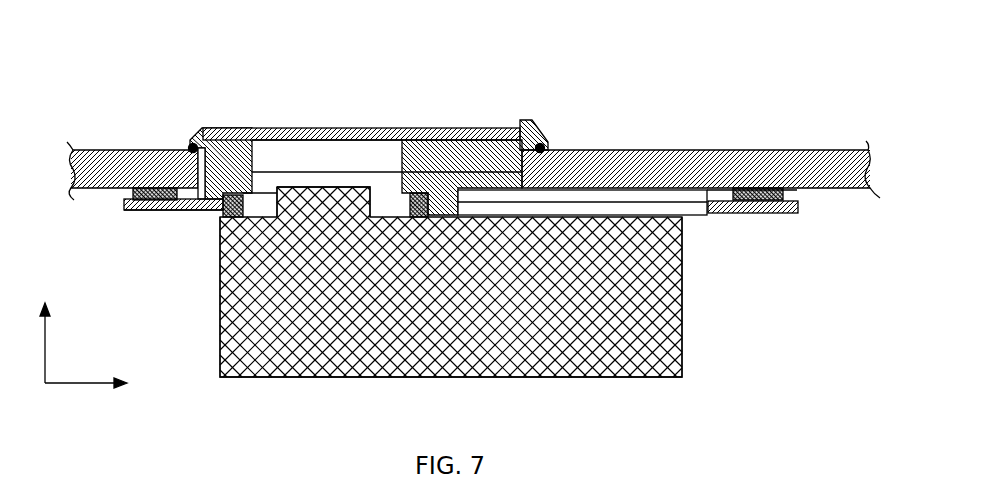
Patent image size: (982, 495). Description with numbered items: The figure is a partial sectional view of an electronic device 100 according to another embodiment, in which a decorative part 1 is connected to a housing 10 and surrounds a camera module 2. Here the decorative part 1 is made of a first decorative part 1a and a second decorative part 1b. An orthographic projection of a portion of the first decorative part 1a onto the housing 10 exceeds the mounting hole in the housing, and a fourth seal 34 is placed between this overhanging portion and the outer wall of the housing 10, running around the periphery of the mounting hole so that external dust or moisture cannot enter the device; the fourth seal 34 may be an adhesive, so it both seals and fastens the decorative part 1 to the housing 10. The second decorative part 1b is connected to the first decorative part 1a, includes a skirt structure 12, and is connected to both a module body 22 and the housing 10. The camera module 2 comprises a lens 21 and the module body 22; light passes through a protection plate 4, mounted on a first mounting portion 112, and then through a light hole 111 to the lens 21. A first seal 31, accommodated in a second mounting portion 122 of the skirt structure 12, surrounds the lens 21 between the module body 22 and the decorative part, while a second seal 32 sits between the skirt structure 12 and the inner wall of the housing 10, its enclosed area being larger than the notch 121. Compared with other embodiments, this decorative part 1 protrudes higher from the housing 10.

The electronic device 100 is at (444, 42).
The housing 10 is at (110, 147).
The decorative part 1 is at (438, 168).
The first decorative part 1a is at (205, 127).
The second decorative part 1b is at (172, 214).
The protection plate 4 is at (307, 132).
The light hole 111 is at (275, 148).
The first mounting portion 112 is at (523, 120).
The skirt structure 12 is at (150, 212).
The notch 121 is at (688, 207).
The second mounting portion 122 is at (440, 168).
The camera module 2 is at (453, 230).
The lens 21 is at (347, 183).
The module body 22 is at (682, 270).
The first seal 31 is at (398, 192).
The second seal 32 is at (127, 194).
The fourth seal 34 is at (190, 145).